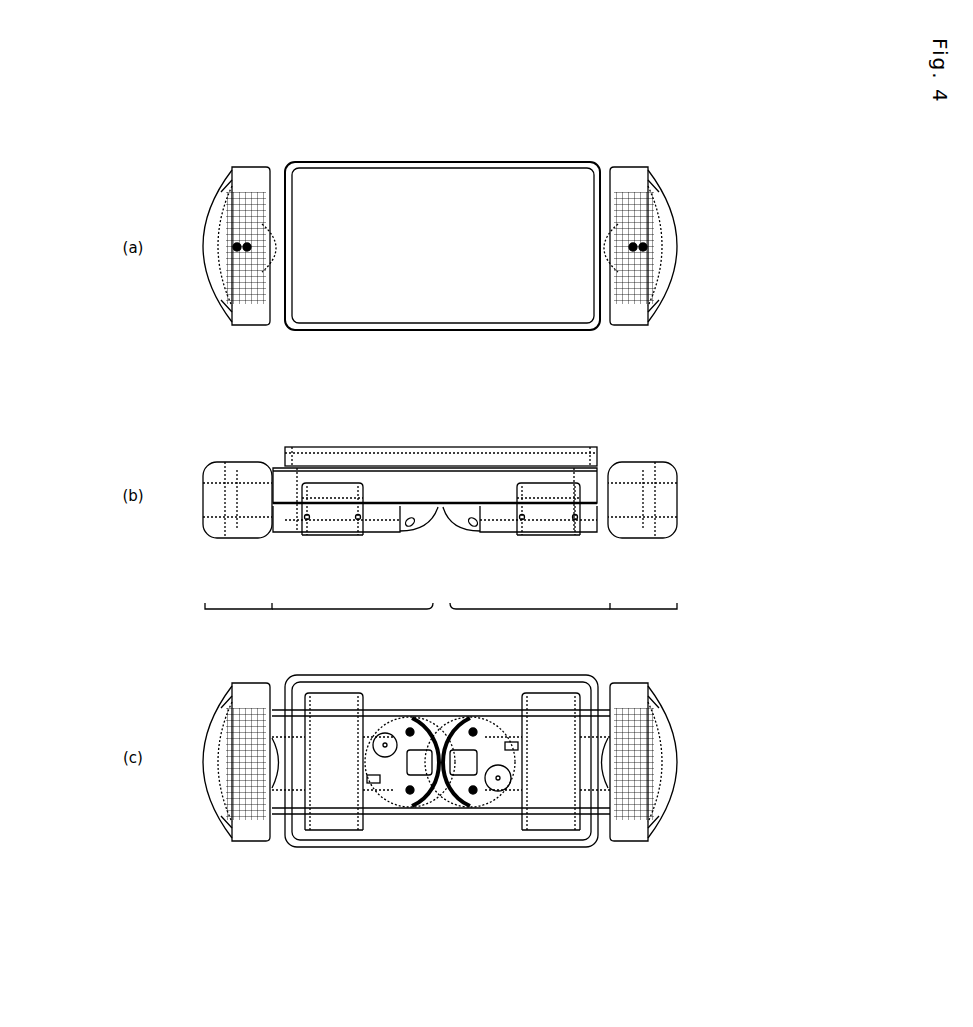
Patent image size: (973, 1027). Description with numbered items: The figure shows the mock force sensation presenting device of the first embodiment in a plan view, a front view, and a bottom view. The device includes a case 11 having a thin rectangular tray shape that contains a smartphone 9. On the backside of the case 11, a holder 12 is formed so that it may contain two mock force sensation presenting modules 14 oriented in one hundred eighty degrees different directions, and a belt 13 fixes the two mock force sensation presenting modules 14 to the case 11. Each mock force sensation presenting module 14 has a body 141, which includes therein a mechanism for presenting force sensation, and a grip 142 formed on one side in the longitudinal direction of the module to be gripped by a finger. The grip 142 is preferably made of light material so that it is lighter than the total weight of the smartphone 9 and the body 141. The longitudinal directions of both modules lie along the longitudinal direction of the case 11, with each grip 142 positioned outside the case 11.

The smartphone 9 is at (471, 186).
The case 11 is at (285, 454).
The holder 12 is at (441, 489).
The belt 13 is at (335, 530).
The mock force sensation presenting module 14 is at (252, 164).
The body 141 is at (441, 622).
The grip 142 is at (441, 622).